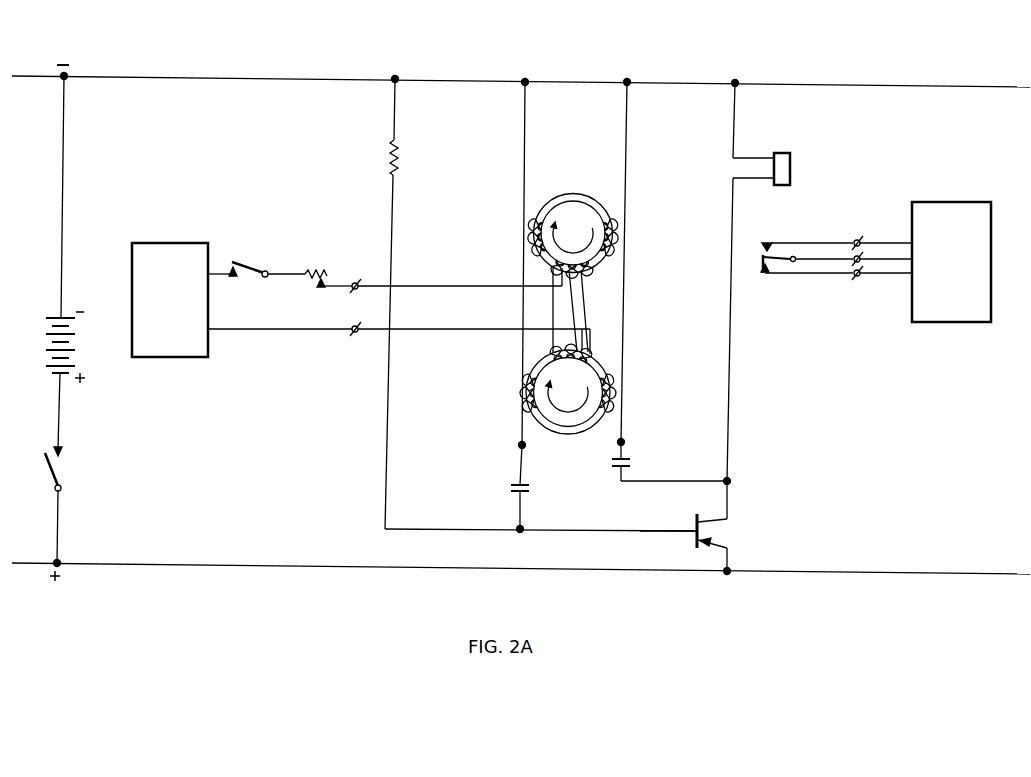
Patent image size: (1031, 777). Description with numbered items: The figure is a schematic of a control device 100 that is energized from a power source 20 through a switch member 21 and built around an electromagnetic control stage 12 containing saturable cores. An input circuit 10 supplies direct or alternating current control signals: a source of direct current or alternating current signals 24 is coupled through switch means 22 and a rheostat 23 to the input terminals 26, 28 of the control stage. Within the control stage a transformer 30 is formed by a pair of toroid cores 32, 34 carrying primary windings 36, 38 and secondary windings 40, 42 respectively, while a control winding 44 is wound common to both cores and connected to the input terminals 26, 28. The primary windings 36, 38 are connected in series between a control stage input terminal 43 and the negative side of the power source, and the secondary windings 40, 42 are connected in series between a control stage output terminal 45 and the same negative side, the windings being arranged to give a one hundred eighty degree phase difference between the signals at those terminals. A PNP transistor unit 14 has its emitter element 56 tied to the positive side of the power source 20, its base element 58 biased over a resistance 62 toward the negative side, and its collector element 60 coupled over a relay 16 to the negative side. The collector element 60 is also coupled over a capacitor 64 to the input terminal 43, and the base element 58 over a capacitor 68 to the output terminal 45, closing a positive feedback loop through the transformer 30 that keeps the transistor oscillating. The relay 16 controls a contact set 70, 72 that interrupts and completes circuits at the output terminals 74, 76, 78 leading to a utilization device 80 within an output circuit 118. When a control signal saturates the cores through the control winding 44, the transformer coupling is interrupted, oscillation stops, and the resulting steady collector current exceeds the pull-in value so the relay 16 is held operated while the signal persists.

The device 100 is at (571, 70).
The power source 20 is at (91, 366).
The switch member 21 is at (63, 468).
The input circuit 10 is at (204, 210).
The source of direct current or alternating current signals 24 is at (184, 357).
The switch means 22 is at (238, 262).
The rheostat 23 is at (310, 271).
The input terminal 26 is at (456, 278).
The input terminal 28 is at (399, 337).
The resistance 62 is at (380, 303).
The control stage 12 is at (602, 165).
The toroid core 32 is at (582, 195).
The secondary winding 40 is at (522, 237).
The primary winding 36 is at (617, 236).
The control winding 44 is at (564, 312).
The toroid core 34 is at (597, 357).
The secondary winding 42 is at (524, 388).
The primary winding 38 is at (611, 381).
The transformer 30 is at (571, 396).
The control stage output terminal 45 is at (531, 447).
The control stage input terminal 43 is at (631, 444).
The capacitor 64 is at (662, 461).
The capacitor 68 is at (510, 489).
The relay 16 is at (767, 281).
The transistor unit 14 is at (742, 528).
The collector element 60 is at (712, 501).
The base element 58 is at (666, 523).
The emitter element 56 is at (714, 556).
The output circuit 118 is at (840, 230).
The contact 70 is at (756, 248).
The contact 72 is at (768, 265).
The output terminal 74 is at (841, 242).
The output terminal 76 is at (854, 258).
The output terminal 78 is at (838, 272).
The utilization device 80 is at (952, 202).